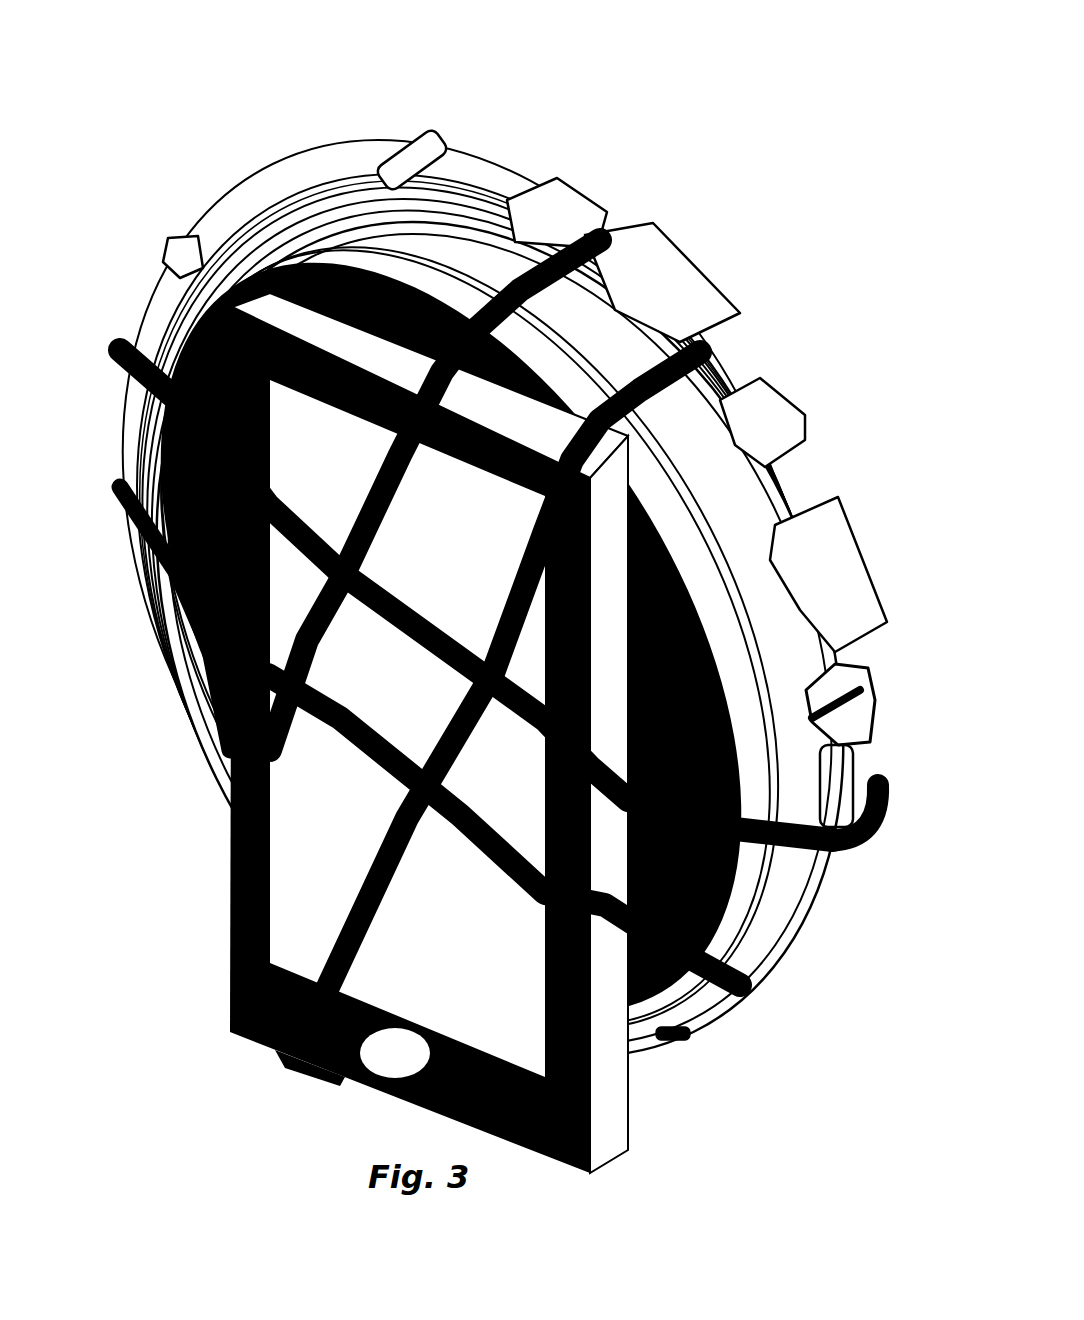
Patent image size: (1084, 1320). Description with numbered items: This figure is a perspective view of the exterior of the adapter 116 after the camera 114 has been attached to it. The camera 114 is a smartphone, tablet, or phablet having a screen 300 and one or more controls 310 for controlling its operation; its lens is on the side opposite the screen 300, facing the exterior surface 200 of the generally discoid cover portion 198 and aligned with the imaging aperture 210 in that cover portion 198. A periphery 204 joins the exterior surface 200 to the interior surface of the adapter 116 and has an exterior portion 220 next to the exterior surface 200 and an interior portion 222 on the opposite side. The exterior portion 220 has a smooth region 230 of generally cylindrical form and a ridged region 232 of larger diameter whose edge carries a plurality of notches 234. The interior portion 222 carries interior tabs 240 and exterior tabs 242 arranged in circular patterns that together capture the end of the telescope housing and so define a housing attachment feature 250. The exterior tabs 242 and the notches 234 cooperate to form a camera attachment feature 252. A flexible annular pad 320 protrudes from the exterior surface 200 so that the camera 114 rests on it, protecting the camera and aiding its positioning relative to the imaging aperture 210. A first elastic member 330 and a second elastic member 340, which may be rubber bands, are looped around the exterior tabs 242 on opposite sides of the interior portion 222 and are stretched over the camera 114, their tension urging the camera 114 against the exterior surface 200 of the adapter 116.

The adapter 116 is at (488, 592).
The periphery 204 is at (140, 140).
The interior portion 222 is at (281, 134).
The smooth region 230 is at (487, 222).
The imaging aperture 210 is at (814, 264).
The ridged region 232 is at (790, 915).
The housing attachment feature 250 is at (794, 331).
The exterior portion 220 is at (120, 236).
The interior tabs 240 is at (566, 205).
The exterior tabs 242 is at (666, 245).
The notches 234 is at (780, 722).
The camera attachment feature 252 is at (864, 906).
The cover portion 198 is at (478, 706).
The exterior surface 200 is at (395, 733).
The screen 300 is at (407, 728).
The controls 310 is at (395, 1053).
The camera 114 is at (230, 860).
The pad 320 is at (180, 595).
The first elastic member 330 is at (792, 845).
The second elastic member 340 is at (647, 378).